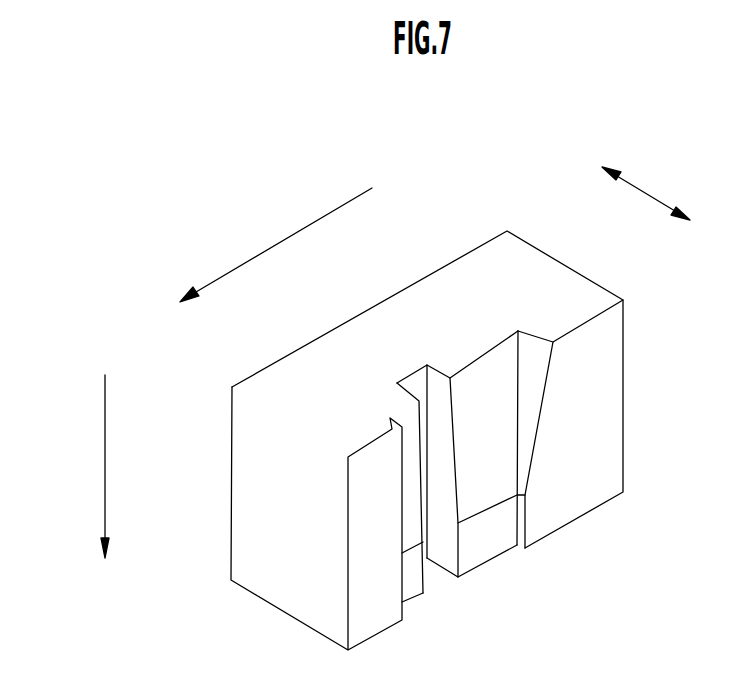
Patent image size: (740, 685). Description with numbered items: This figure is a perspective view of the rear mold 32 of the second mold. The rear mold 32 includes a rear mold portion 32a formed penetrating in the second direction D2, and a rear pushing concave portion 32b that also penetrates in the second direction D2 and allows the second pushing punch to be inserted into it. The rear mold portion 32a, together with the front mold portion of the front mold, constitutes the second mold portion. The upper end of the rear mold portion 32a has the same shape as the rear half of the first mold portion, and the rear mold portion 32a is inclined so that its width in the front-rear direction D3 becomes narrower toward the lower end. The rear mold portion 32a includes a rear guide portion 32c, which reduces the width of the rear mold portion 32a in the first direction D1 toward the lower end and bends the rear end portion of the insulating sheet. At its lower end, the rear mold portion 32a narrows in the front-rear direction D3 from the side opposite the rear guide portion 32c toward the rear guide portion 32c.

The rear mold 32 is at (483, 260).
The rear mold portion 32a is at (403, 433).
The rear pushing concave portion 32b is at (412, 386).
The rear guide portion 32c is at (535, 348).
The first direction D1 is at (287, 237).
The second direction D2 is at (105, 457).
The front-rear direction D3 is at (650, 193).